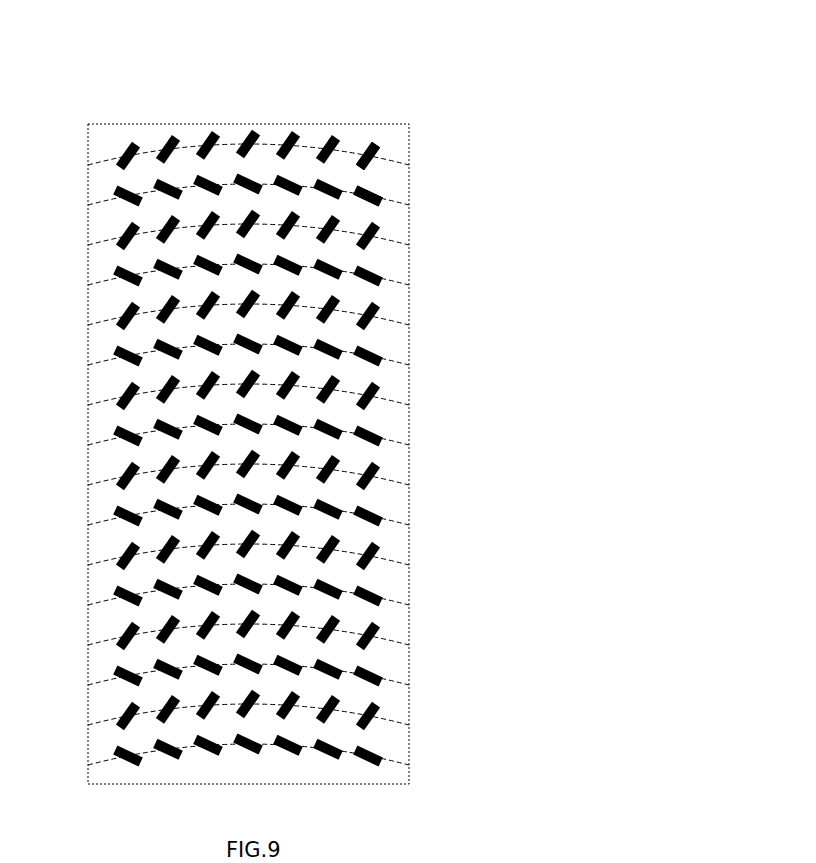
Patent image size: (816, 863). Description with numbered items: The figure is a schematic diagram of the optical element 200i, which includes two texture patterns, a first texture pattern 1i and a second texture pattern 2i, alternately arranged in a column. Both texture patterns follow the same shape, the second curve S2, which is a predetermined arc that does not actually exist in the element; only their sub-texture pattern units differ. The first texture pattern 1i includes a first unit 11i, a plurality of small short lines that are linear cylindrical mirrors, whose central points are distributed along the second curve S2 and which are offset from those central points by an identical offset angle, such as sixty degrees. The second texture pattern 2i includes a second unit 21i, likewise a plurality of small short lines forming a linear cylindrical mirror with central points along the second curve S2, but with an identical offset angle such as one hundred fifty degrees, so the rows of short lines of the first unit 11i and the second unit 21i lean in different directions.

The optical element 200i is at (241, 63).
The first texture pattern 1i is at (113, 140).
The first unit 11i is at (381, 151).
The second texture pattern 2i is at (103, 255).
The second unit 21i is at (374, 190).
The second curve S2 is at (307, 148).